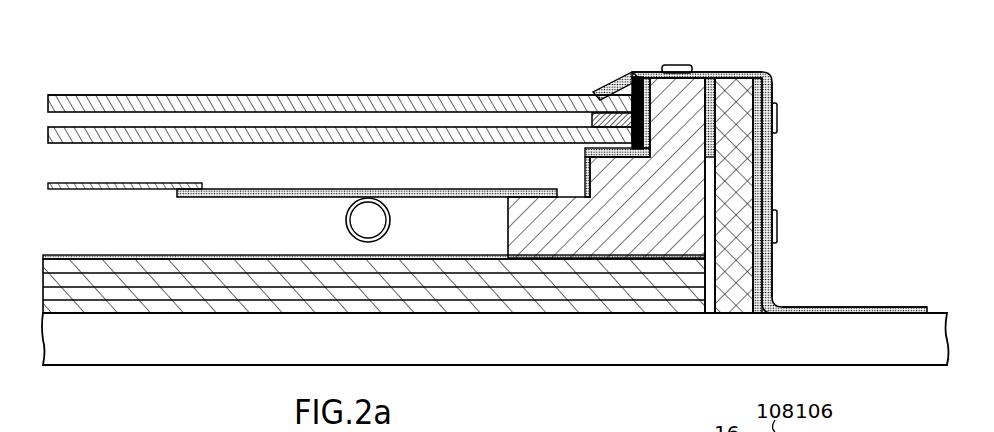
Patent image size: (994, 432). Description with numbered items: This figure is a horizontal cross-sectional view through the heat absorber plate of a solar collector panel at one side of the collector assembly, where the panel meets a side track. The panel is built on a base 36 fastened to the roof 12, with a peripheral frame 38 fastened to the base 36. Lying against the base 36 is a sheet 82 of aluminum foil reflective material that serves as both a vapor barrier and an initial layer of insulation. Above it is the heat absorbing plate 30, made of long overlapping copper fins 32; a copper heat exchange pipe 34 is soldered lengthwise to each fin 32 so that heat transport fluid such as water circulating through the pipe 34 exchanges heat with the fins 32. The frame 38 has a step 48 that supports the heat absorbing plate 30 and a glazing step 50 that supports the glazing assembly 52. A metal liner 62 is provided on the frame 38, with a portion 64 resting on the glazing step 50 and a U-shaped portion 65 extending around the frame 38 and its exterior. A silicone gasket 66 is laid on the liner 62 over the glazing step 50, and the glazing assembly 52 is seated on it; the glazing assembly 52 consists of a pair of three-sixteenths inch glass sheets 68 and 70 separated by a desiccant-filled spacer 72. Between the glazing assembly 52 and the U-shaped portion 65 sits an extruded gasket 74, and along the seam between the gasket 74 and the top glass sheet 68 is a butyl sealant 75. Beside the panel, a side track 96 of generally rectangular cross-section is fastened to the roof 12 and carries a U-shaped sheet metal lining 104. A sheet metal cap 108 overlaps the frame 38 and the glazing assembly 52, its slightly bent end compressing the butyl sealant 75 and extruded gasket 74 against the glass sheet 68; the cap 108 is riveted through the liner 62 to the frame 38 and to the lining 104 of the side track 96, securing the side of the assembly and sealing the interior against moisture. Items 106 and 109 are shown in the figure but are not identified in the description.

The roof 12 is at (431, 351).
The heat absorbing plate 30 is at (232, 186).
The copper fin 32 is at (424, 189).
The copper heat exchange pipe 34 is at (391, 228).
The base 36 is at (612, 290).
The peripheral frame 38 is at (768, 188).
The step 48 is at (606, 168).
The glazing step 50 is at (620, 185).
The glazing assembly 52 is at (322, 95).
The metal liner 62 is at (677, 128).
The portion of metal liner 64 is at (646, 137).
The U-shaped portion of metal liner 65 is at (690, 117).
The silicone gasket 66 is at (585, 153).
The glass sheet 68 is at (262, 95).
The glass sheet 70 is at (272, 143).
The desiccant-filled spacer 72 is at (595, 118).
The extruded gasket 74 is at (659, 113).
The butyl sealant 75 is at (620, 85).
The sheet of aluminum foil reflective material 82 is at (250, 257).
The side track 96 is at (760, 290).
The U-shaped sheet metal lining 104 is at (750, 160).
The base flange 106 is at (847, 307).
The sheet metal cap 108 is at (760, 73).
The gasket 109 is at (688, 66).